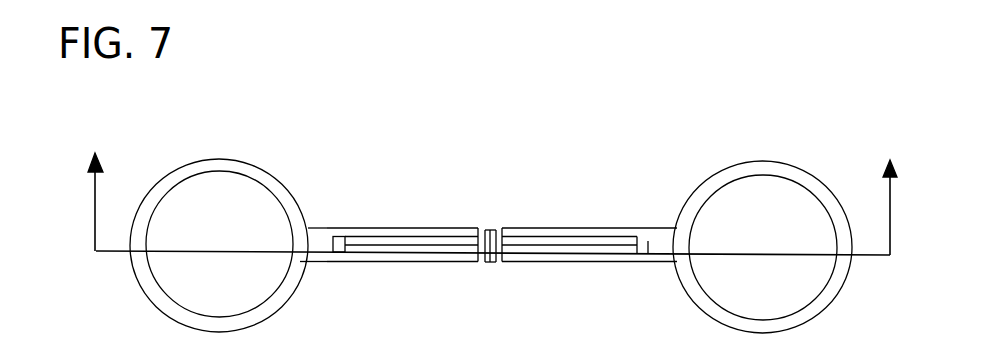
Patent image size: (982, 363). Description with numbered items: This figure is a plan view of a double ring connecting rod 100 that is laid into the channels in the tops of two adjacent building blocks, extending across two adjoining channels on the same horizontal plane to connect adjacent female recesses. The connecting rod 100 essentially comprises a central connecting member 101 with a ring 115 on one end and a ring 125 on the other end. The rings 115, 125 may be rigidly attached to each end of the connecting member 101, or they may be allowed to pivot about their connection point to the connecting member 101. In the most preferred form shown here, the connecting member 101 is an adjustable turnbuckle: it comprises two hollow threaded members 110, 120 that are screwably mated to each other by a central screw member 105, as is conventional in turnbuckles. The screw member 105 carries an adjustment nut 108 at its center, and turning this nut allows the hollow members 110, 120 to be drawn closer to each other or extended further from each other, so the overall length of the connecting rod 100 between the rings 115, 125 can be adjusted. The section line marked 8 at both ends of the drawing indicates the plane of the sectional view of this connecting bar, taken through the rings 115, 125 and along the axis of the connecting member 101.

The connecting rod 100 is at (504, 128).
The section line 8- 8 is at (490, 190).
The central connecting member 101 is at (311, 232).
The central screw member 105 is at (435, 243).
The adjustment nut 108 is at (492, 253).
The hollow threaded member 110 is at (376, 232).
The ring 115 is at (199, 168).
The hollow threaded member 120 is at (549, 234).
The ring 125 is at (743, 170).